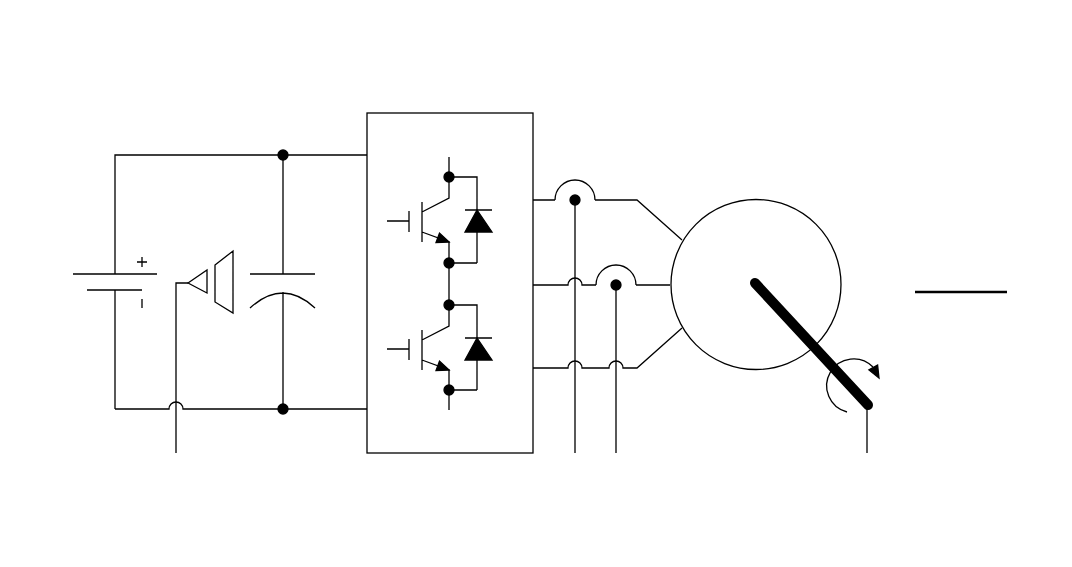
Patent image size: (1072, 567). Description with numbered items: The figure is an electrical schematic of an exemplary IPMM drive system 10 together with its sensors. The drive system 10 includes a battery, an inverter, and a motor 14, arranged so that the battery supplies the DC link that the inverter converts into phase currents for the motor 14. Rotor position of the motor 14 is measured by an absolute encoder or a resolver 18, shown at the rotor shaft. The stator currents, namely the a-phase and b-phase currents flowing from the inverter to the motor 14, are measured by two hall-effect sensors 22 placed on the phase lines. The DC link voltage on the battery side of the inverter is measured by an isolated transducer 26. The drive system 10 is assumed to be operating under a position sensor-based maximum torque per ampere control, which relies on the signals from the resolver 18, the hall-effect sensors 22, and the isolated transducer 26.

The drive system 10 is at (890, 136).
The motor 14 is at (848, 223).
The resolver 18 is at (914, 355).
The hall-effect sensors 22 is at (641, 173).
The isolated transducer 26 is at (202, 332).